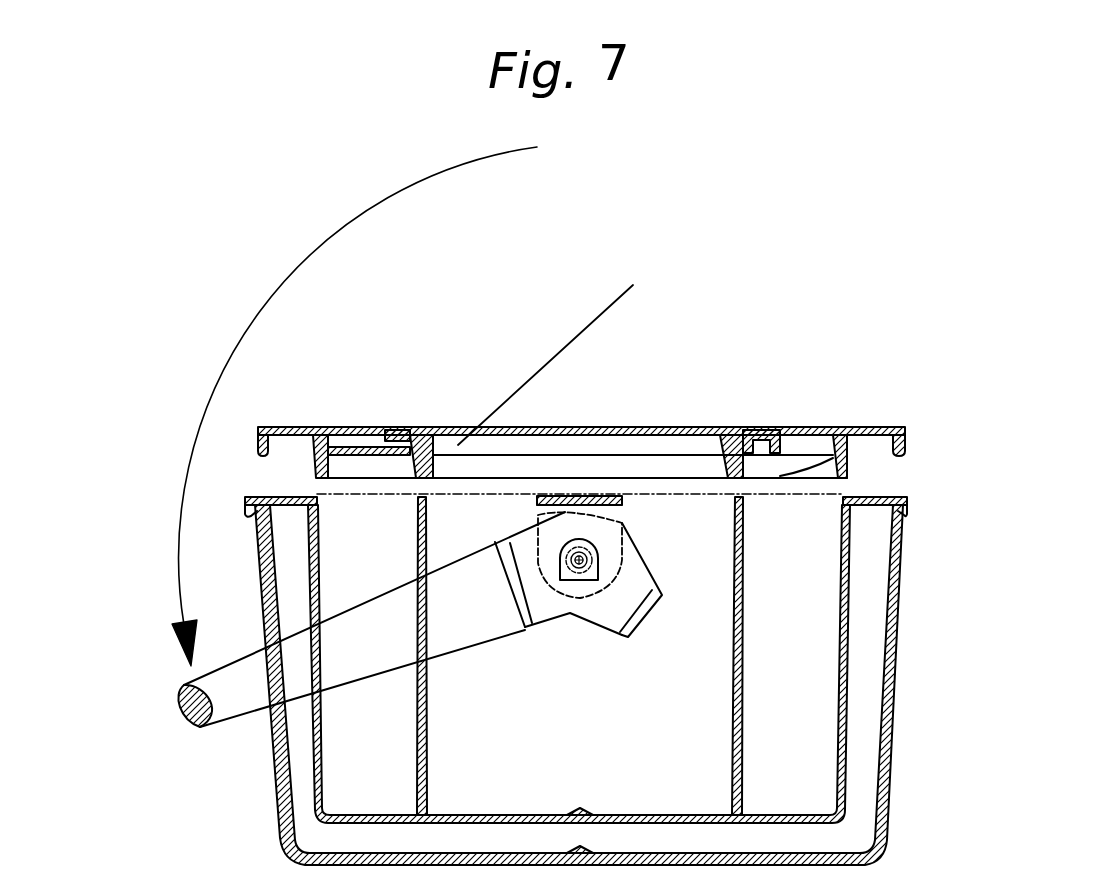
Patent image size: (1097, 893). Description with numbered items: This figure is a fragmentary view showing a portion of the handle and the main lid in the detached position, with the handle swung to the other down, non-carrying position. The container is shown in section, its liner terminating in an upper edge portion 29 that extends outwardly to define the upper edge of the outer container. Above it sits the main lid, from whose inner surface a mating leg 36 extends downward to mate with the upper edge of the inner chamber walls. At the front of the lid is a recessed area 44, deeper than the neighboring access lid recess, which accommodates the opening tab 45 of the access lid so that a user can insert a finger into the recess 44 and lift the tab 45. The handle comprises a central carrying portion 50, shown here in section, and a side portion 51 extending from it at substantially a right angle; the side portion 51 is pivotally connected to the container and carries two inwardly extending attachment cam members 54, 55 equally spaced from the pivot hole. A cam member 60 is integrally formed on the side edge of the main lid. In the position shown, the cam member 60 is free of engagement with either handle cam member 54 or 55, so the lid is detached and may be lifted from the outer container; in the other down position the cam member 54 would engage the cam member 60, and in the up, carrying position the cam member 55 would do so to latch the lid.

The upper edge portion 29 is at (878, 495).
The inner mating leg 36 is at (600, 487).
The recessed area 44 is at (343, 437).
The opening tab 45 is at (390, 428).
The central carrying portion 50 is at (186, 707).
The side portion 51 is at (369, 618).
The attachment cam member 54 is at (640, 617).
The attachment cam member 55 is at (518, 597).
The cam member 60 is at (583, 490).